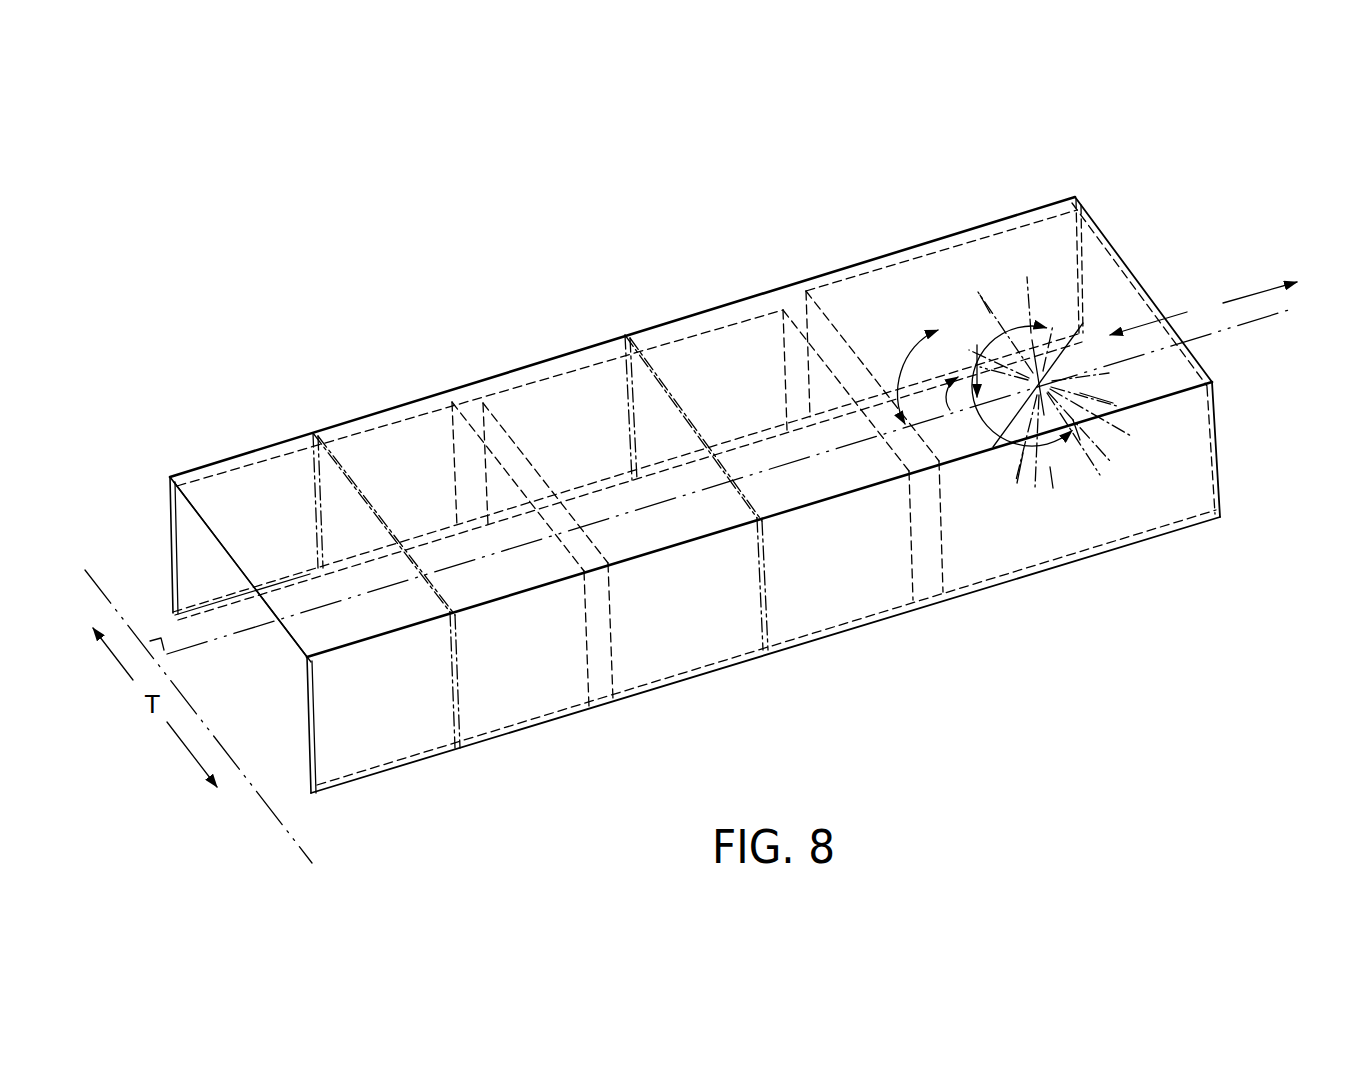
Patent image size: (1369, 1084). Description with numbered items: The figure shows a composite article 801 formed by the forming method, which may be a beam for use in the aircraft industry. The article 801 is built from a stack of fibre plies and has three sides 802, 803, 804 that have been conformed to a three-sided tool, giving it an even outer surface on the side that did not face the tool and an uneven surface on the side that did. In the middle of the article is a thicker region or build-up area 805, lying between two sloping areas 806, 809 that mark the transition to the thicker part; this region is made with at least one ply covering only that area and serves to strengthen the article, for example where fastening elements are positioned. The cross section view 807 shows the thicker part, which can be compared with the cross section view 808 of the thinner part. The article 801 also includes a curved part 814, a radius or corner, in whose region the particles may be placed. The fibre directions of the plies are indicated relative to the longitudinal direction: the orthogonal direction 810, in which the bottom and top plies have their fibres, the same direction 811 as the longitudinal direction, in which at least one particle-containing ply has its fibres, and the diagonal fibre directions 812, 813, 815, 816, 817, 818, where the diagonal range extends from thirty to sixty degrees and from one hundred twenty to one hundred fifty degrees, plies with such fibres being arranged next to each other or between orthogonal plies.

The article 801 is at (499, 219).
The side 802 is at (1097, 515).
The side 803 is at (1105, 312).
The side 804 is at (953, 282).
The thicker region or build-up area 805 is at (857, 570).
The sloping area 806 is at (938, 552).
The cross section view of thicker part 807 is at (747, 600).
The cross section view of thinner part 808 is at (443, 692).
The sloping area 809 is at (587, 660).
The orthogonal direction 810 is at (1055, 310).
The same direction as the longitudinal direction 811 is at (1120, 356).
The diagonal fibre direction 812 is at (937, 332).
The diagonal fibre direction 813 is at (1078, 212).
The curved part 814 is at (220, 460).
The diagonal fibre direction 815 is at (903, 421).
The diagonal fibre direction 816 is at (955, 323).
The diagonal fibre direction 817 is at (987, 288).
The diagonal fibre direction 818 is at (1097, 347).